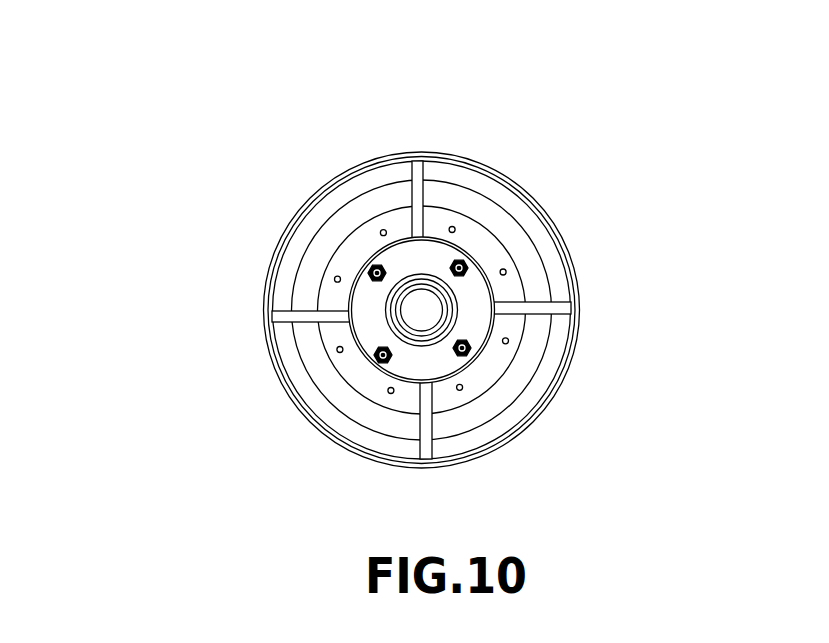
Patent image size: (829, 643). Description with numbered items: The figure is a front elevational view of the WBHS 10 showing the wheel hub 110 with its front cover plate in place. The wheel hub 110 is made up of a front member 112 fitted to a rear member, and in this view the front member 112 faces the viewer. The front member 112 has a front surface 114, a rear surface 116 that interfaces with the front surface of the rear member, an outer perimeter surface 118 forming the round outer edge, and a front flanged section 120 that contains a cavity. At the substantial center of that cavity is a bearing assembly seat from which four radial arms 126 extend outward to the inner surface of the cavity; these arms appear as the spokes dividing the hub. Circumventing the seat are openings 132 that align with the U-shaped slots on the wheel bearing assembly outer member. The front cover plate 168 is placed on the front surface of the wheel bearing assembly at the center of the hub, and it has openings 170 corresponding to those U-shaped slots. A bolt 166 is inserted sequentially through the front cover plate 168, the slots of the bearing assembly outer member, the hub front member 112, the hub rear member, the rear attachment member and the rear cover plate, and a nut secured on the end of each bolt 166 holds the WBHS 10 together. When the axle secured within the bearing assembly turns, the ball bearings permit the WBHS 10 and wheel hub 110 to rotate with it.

The WBHS 10 is at (104, 68).
The wheel hub 110 is at (676, 266).
The front member 112 is at (448, 293).
The front surface 114 is at (576, 338).
The rear surface 116 is at (562, 408).
The outer perimeter surface 118 is at (516, 443).
The front flanged section 120 is at (494, 344).
The radial arms 126 is at (305, 315).
The openings 132 is at (430, 303).
The openings 170 is at (548, 249).
The bolt 166 is at (375, 258).
The front cover plate 168 is at (421, 262).